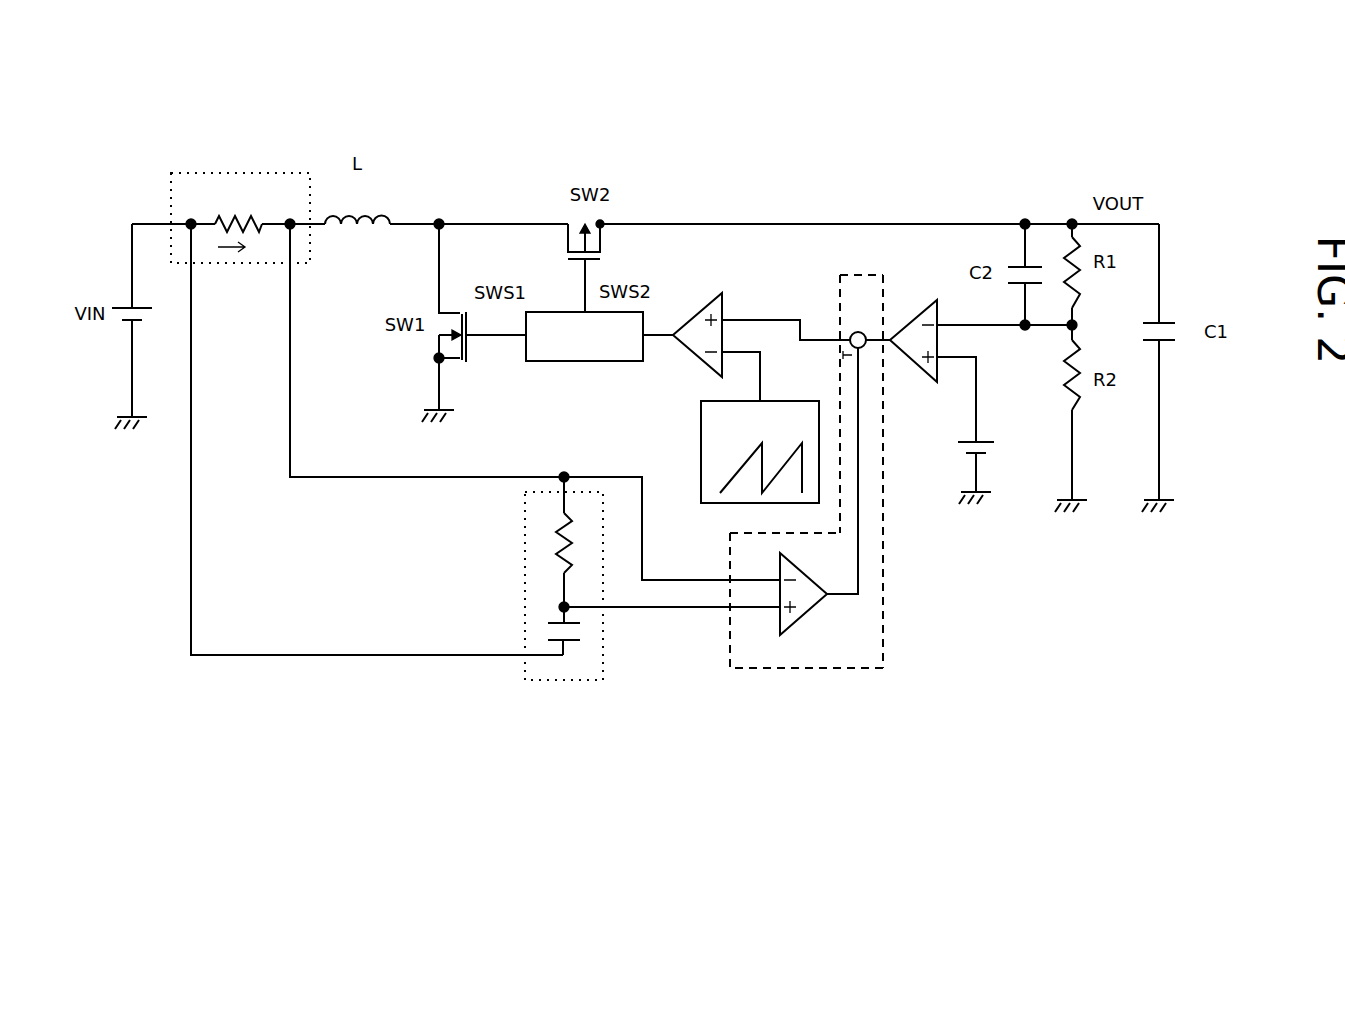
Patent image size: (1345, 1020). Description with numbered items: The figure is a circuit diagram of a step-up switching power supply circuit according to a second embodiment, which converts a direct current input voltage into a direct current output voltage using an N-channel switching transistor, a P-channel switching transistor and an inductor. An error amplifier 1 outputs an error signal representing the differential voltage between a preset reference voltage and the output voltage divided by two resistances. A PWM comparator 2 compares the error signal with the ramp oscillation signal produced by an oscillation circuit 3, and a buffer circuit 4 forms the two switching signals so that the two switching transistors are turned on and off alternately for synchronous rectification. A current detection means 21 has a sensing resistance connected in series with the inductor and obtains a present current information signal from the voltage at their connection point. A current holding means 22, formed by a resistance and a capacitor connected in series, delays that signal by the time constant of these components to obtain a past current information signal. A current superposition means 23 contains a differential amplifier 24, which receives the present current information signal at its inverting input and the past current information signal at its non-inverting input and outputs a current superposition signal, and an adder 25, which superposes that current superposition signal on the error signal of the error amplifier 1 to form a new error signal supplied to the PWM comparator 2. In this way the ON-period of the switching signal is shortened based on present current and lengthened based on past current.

The error amplifier 1 is at (909, 324).
The PWM comparator 2 is at (700, 298).
The oscillation circuit 3 is at (706, 459).
The buffer circuit 4 is at (568, 354).
The current detection means 21 is at (183, 173).
The current holding means 22 is at (586, 683).
The current superposition means 23 is at (883, 618).
The differential amplifier 24 is at (810, 612).
The adder 25 is at (858, 332).